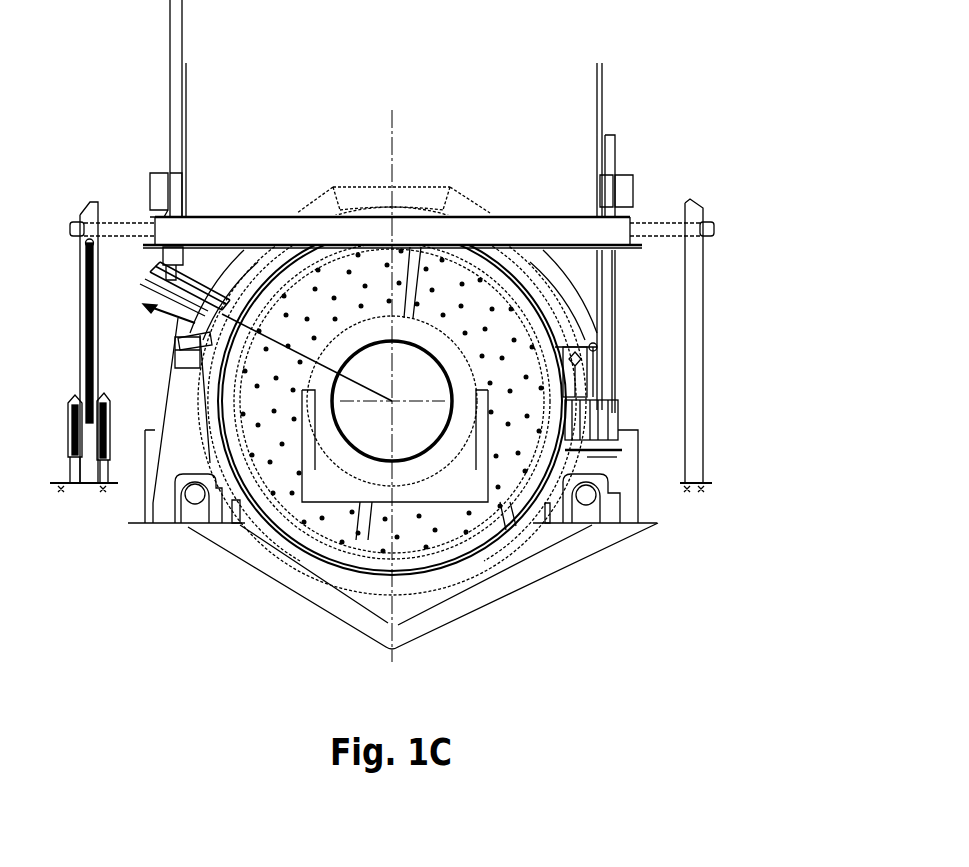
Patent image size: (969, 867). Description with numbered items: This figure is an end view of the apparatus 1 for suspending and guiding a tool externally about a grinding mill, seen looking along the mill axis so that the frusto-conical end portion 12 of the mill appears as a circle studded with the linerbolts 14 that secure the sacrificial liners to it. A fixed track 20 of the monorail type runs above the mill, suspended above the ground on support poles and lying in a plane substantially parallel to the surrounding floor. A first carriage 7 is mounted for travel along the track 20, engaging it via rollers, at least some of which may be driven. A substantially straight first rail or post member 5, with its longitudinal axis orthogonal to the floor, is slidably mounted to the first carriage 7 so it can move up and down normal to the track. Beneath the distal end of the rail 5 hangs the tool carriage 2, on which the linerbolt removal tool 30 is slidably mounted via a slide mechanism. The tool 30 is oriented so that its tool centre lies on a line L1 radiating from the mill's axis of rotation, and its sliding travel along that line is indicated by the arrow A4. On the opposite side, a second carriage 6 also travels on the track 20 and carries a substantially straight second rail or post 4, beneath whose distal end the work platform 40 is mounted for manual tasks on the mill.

The apparatus 1 is at (738, 163).
The tool carriage 2 is at (163, 270).
The second rail or post 4 is at (615, 152).
The first rail or post member 5 is at (170, 132).
The second carriage 6 is at (633, 190).
The first carriage 7 is at (150, 181).
The frusto-conical end portion 12 is at (248, 426).
The linerbolt 14 is at (250, 402).
The fixed track 20 is at (532, 216).
The linerbolt removal tool 30 is at (226, 322).
The work platform 40 is at (614, 452).
The line radiating from the axis of rotation L1 is at (292, 340).
The arrow A4 is at (168, 325).